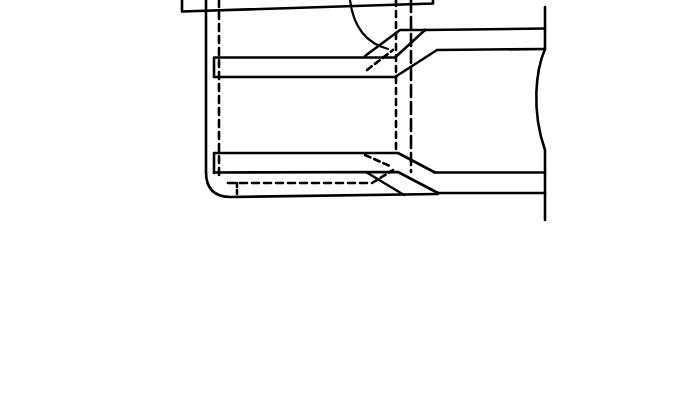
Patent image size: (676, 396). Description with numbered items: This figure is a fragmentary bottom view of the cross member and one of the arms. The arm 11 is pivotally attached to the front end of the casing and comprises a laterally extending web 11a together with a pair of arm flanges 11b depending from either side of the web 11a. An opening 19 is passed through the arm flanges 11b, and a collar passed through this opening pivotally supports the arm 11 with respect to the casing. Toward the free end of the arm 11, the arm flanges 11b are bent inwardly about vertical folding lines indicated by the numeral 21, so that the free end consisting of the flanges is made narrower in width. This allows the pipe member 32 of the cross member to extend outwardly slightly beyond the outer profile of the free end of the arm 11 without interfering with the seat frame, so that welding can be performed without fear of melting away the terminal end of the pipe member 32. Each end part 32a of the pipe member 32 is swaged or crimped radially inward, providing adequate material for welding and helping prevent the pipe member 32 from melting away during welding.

The pipe member 32 is at (237, 36).
The end part of the pipe member 32a is at (223, 193).
The opening 19 is at (249, 162).
The vertical folding line 21 is at (395, 176).
The web 11a is at (441, 106).
The arm flanges 11b is at (517, 183).
The arm 11 is at (558, 272).